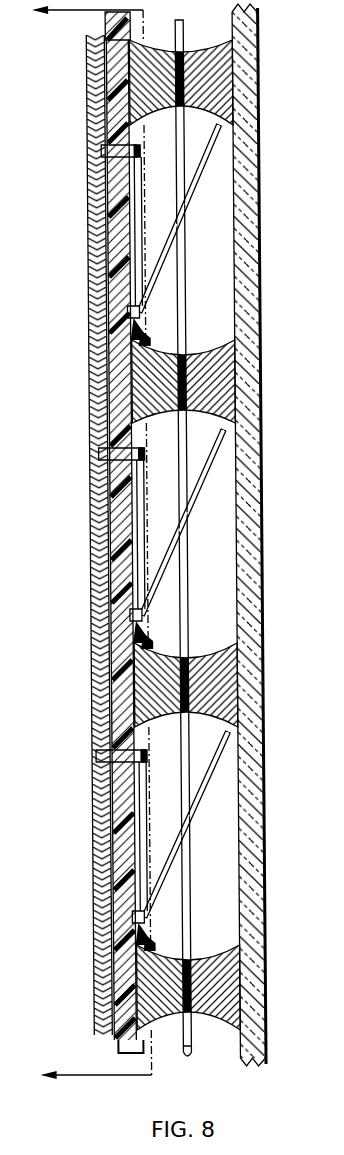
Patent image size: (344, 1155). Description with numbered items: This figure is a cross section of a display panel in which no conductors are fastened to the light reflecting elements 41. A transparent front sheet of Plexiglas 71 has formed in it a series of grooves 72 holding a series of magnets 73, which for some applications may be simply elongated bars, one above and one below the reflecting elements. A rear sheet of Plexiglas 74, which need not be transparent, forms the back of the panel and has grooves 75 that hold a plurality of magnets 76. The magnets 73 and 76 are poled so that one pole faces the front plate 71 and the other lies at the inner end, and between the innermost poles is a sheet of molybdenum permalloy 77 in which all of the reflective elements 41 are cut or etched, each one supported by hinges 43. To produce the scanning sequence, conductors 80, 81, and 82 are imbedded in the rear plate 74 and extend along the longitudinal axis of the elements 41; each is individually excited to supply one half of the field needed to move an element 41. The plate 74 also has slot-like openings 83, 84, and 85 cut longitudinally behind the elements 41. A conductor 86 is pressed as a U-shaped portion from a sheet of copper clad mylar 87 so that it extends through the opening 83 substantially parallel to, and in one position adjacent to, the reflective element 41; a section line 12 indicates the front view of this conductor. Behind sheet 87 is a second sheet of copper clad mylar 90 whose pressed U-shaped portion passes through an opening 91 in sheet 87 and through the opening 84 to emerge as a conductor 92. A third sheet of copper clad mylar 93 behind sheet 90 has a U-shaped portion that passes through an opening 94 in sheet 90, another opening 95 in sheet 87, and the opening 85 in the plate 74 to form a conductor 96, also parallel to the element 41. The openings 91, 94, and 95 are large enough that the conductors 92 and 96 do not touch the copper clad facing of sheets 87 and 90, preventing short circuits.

The section line 12 is at (103, 542).
The light reflecting element 41 is at (212, 156).
The hinge 43 is at (180, 235).
The front sheet of Plexiglas 71 is at (263, 493).
The groove 72 is at (238, 78).
The magnet 73 is at (235, 42).
The rear sheet of Plexiglas 74 is at (114, 22).
The groove 75 is at (115, 82).
The magnet 76 is at (95, 129).
The sheet of molybdenum permalloy material 77 is at (186, 1058).
The conductor 80 is at (139, 305).
The conductor 81 is at (140, 608).
The conductor 82 is at (140, 910).
The opening 83 is at (141, 162).
The opening 84 is at (136, 476).
The opening 85 is at (141, 763).
The conductor 86 is at (138, 148).
The sheet of copper clad mylar 87 is at (95, 181).
The second sheet of copper clad mylar 90 is at (92, 232).
The opening 91 is at (90, 473).
The conductor 92 is at (140, 450).
The third sheet of copper clad mylar 93 is at (88, 268).
The opening 94 is at (92, 766).
The opening 95 is at (92, 790).
The conductor 96 is at (141, 752).